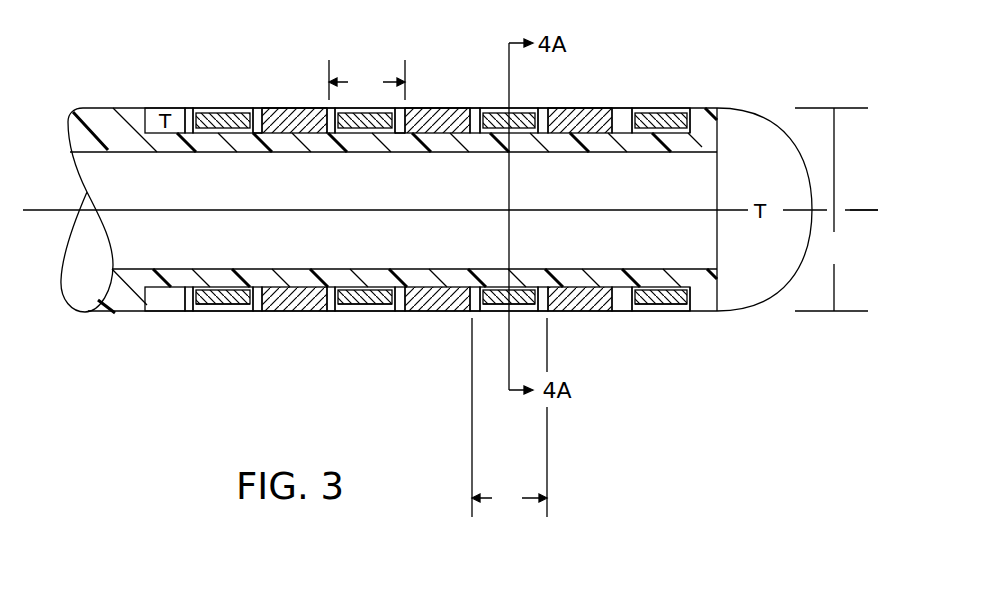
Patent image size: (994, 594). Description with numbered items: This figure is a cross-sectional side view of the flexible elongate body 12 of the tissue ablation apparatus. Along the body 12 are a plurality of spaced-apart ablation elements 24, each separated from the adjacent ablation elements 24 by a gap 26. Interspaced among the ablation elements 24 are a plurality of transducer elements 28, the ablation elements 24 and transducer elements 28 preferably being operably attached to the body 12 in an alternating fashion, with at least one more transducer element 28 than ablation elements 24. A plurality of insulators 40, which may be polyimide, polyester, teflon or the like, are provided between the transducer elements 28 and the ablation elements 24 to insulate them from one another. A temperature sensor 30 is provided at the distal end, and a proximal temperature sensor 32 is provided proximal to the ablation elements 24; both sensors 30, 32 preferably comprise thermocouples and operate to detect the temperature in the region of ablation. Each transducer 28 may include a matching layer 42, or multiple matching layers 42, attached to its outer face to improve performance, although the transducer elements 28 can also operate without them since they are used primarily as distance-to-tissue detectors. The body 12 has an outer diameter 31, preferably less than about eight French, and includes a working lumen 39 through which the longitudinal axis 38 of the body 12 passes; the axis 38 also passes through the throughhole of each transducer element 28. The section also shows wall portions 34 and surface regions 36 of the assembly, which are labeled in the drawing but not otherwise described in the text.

The elongate body 12 is at (708, 107).
The ablation elements 24 is at (305, 120).
The gap 26 is at (438, 288).
The transducer elements 28 is at (350, 307).
The temperature sensor 30 is at (742, 178).
The outer diameter 31 is at (831, 209).
The proximal temperature sensor 32 is at (153, 107).
The wall segment between electrodes 34 is at (288, 133).
The electrode outer surface 36 is at (293, 107).
The longitudinal axis 38 is at (44, 210).
The working lumen 39 is at (591, 196).
The insulators 40 is at (543, 107).
The matching layer 42 is at (236, 308).